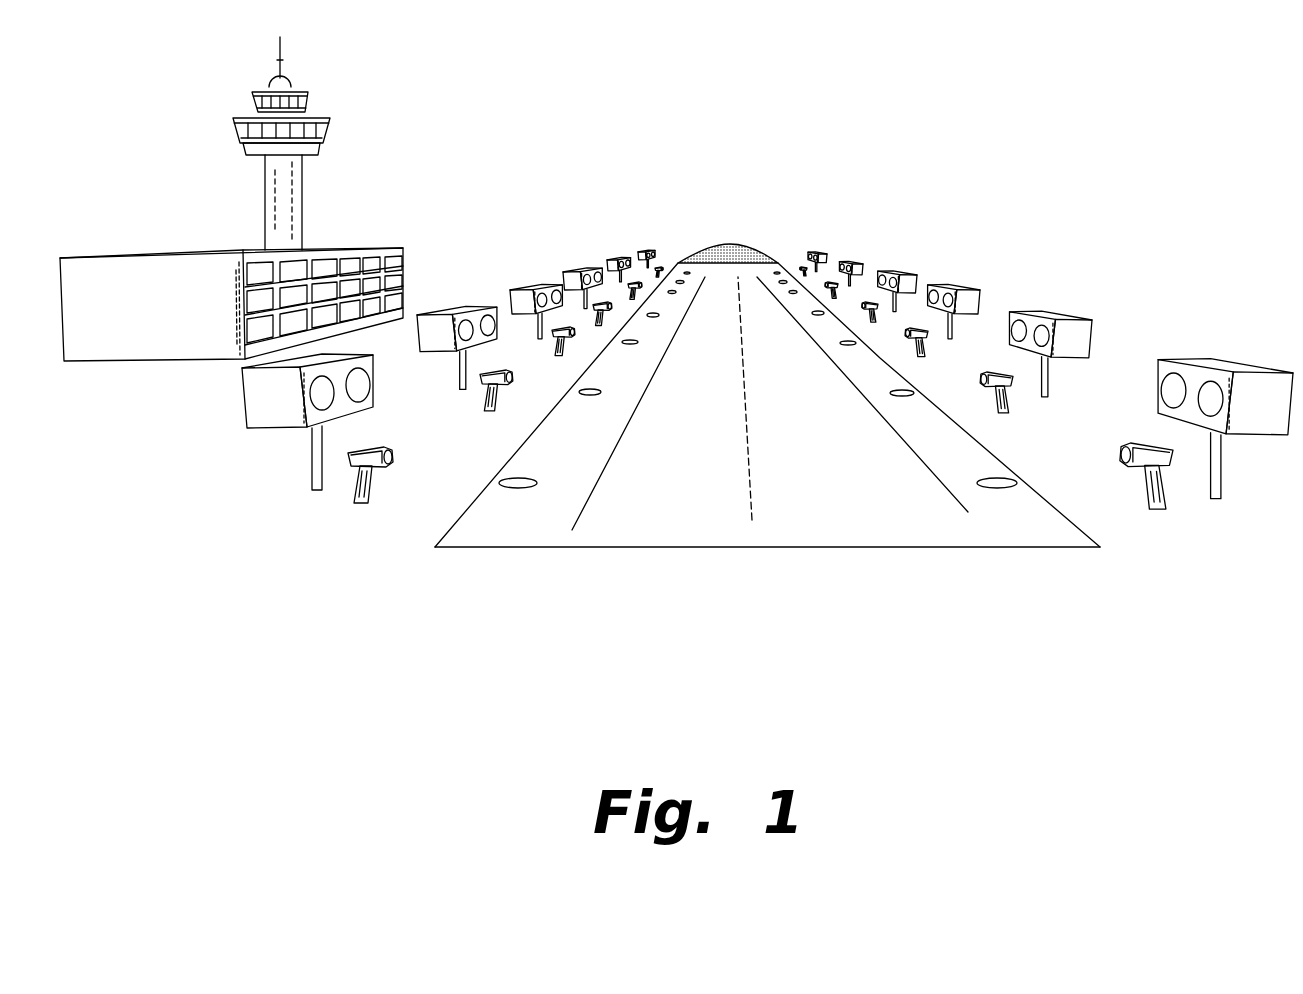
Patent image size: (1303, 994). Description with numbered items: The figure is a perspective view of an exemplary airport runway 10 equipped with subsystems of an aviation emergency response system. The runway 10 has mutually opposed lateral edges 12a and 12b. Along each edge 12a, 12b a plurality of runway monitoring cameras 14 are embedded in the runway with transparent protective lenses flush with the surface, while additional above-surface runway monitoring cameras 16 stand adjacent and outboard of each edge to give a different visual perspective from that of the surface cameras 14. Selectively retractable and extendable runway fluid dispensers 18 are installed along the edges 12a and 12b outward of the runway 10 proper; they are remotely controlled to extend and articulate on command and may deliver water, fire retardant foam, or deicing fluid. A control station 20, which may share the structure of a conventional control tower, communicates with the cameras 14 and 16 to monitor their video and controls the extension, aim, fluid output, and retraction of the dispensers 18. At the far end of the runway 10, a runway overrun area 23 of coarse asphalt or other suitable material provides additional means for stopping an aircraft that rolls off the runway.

The airport runway 10 is at (785, 457).
The lateral edge 12a is at (603, 357).
The lateral edge 12b is at (877, 358).
The runway monitoring cameras 14 is at (594, 400).
The above-surface runway monitoring cameras 16 is at (573, 272).
The runway fluid dispensers 18 is at (482, 378).
The control station 20 is at (333, 123).
The runway overrun area 23 is at (729, 243).